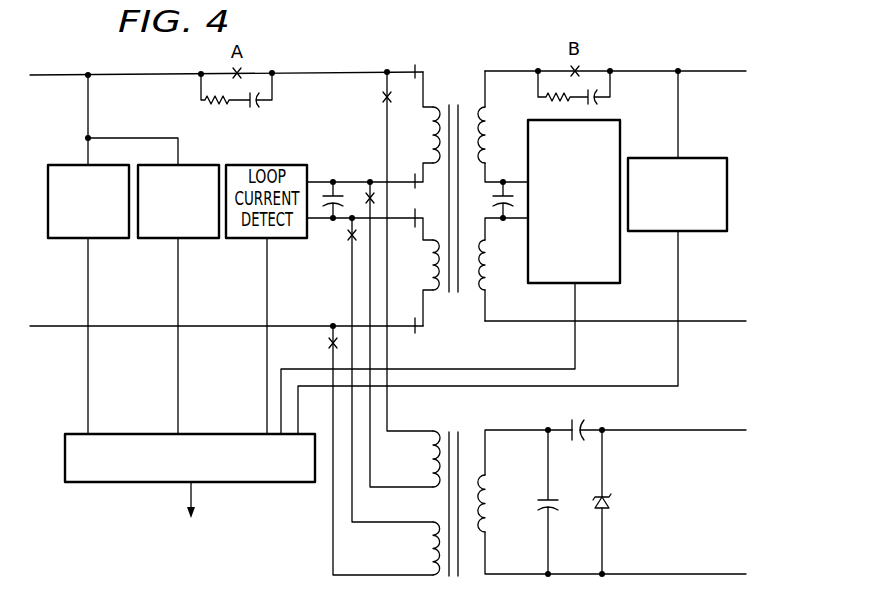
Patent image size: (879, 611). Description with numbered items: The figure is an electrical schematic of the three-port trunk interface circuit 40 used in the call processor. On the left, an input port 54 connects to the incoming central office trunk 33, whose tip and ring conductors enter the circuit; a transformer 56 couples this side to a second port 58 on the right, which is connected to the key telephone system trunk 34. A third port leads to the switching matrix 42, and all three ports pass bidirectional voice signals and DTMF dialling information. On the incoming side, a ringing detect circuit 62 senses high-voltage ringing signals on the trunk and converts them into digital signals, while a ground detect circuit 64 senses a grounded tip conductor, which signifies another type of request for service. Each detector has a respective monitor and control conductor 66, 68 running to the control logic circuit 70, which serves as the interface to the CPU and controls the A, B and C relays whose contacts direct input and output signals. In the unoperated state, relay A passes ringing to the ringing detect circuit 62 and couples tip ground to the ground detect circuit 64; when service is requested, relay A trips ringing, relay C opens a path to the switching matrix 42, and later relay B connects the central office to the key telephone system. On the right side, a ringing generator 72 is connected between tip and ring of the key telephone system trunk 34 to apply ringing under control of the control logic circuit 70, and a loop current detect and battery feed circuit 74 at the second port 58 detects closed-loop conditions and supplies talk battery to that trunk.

The incoming central office trunk 33 is at (12, 209).
The key telephone system trunk 34 is at (736, 206).
The trunk interface circuit 40 is at (297, 65).
The switching matrix 42 is at (712, 496).
The input port 54 is at (56, 130).
The transformer 56 is at (472, 62).
The second port 58 is at (727, 119).
The ringing detect circuit 62 is at (60, 239).
The ground detect circuit 64 is at (203, 164).
The monitor and control conductor 66 is at (88, 356).
The monitor and control conductor 68 is at (178, 352).
The control logic circuit 70 is at (275, 482).
The ringing generator 72 is at (646, 158).
The loop current detect and battery feed circuit 74 is at (620, 268).